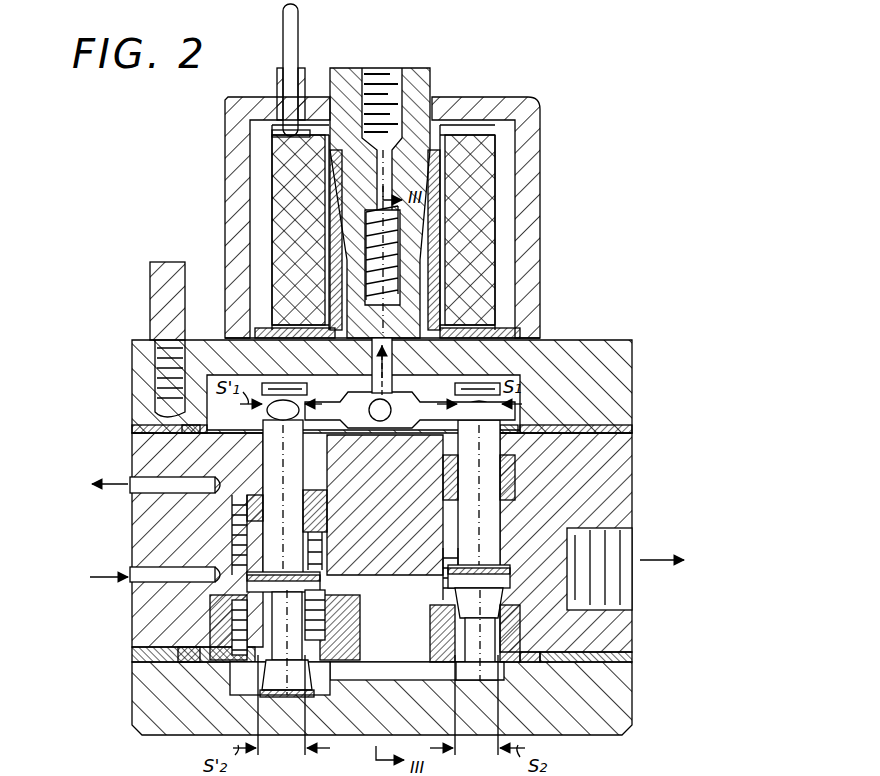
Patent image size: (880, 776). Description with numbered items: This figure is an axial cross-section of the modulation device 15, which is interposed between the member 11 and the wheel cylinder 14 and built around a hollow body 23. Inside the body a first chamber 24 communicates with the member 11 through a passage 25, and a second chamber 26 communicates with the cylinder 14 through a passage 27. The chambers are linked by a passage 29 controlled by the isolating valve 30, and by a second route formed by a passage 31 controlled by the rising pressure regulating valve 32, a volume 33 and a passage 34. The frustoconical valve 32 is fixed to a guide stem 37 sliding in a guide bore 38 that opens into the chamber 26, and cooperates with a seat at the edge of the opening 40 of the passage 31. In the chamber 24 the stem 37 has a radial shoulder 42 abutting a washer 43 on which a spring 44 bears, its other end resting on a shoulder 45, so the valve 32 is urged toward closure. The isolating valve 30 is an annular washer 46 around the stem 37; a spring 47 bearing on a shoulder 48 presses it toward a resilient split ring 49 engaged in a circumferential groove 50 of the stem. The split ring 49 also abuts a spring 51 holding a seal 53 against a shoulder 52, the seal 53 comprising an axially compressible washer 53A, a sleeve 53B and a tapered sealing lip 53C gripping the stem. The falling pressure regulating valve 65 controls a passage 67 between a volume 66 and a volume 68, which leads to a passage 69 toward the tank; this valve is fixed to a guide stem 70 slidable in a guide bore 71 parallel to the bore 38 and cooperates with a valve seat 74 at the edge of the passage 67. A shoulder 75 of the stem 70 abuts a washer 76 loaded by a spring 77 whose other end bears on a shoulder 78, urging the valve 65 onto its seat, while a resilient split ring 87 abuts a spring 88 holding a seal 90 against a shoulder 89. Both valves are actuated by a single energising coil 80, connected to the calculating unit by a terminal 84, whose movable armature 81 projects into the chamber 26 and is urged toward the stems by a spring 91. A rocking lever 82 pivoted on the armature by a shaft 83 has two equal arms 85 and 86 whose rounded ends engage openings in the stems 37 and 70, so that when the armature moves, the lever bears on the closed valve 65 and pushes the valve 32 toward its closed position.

The member 11 is at (134, 572).
The wheel cylinder 14 is at (129, 490).
The modulation device 15 is at (218, 178).
The hollow body 23 is at (634, 360).
The first chamber 24 is at (222, 586).
The passage 25 is at (134, 567).
The second chamber 26 is at (215, 410).
The passage 27 is at (135, 477).
The passage 29 is at (330, 455).
The isolating valve 30 is at (330, 578).
The passage 31 is at (280, 640).
The rising pressure regulating valve 32 is at (322, 682).
The volume 33 is at (240, 688).
The passage 34 is at (400, 682).
The guide stem 37 is at (295, 511).
The guide bore 38 is at (262, 448).
The opening 40 is at (268, 665).
The radial shoulder 42 is at (343, 596).
The washer 43 is at (335, 592).
The spring 44 is at (345, 612).
The shoulder 45 is at (350, 640).
The washer 46 is at (215, 578).
The spring 47 is at (215, 615).
The shoulder 48 is at (228, 627).
The resilient split ring 49 is at (250, 567).
The circumferential groove 50 is at (247, 552).
The spring 51 is at (243, 548).
The shoulder 52 is at (258, 495).
The seal 53 is at (318, 490).
The axially compressible washer 53A is at (325, 500).
The sleeve 53B is at (327, 512).
The tapered sealing lip 53C is at (327, 528).
The falling pressure regulating valve 65 is at (478, 682).
The volume 66 is at (490, 665).
The passage 67 is at (440, 620).
The volume 68 is at (512, 615).
The passage 69 is at (560, 540).
The guide stem 70 is at (488, 466).
The guide bore 71 is at (503, 512).
The valve seat 74 is at (445, 578).
The shoulder 75 is at (510, 582).
The washer 76 is at (505, 595).
The spring 77 is at (445, 560).
The shoulder 78 is at (445, 552).
The energising coil 80 is at (502, 190).
The movable armature 81 is at (420, 278).
The rocking lever 82 is at (378, 395).
The shaft 83 is at (378, 424).
The terminal 84 is at (288, 38).
The arm 85 is at (325, 398).
The arm 86 is at (445, 398).
The resilient split ring 87 is at (512, 400).
The spring 88 is at (505, 415).
The shoulder 89 is at (515, 488).
The seal 90 is at (517, 470).
The spring 91 is at (370, 212).